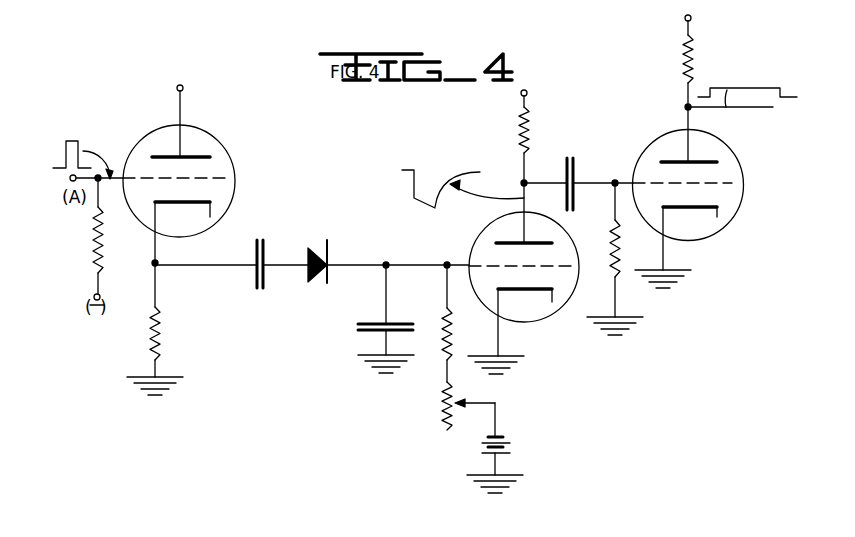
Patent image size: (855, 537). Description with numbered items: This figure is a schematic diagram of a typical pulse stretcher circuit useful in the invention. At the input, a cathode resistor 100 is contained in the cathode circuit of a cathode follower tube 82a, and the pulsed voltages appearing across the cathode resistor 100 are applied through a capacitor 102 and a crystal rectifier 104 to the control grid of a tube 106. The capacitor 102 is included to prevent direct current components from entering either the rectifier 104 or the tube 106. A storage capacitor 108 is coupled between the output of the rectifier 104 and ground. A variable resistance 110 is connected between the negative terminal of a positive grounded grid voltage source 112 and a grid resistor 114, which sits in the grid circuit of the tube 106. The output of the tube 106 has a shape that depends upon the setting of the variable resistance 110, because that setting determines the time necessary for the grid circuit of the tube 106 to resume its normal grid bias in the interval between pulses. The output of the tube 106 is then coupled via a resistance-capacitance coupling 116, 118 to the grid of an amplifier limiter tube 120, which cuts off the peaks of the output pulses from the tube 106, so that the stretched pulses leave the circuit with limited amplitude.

The cathode follower tube 82a is at (224, 150).
The cathode resistor 100 is at (159, 322).
The capacitor 102 is at (259, 239).
The crystal rectifier 104 is at (322, 246).
The tube 106 is at (470, 250).
The storage capacitor 108 is at (356, 328).
The variable resistance 110 is at (445, 398).
The grid voltage source 112 is at (530, 430).
The grid resistor 114 is at (452, 336).
The resistance of resistance-capacitance coupling 116 is at (609, 250).
The capacitance of resistance-capacitance coupling 118 is at (569, 157).
The amplifier limiter tube 120 is at (740, 199).